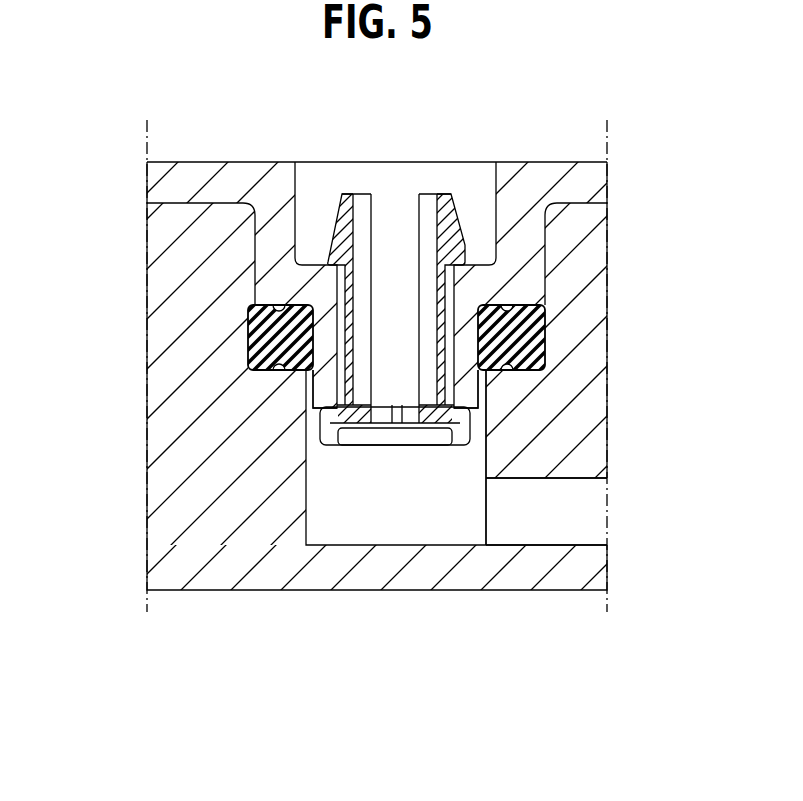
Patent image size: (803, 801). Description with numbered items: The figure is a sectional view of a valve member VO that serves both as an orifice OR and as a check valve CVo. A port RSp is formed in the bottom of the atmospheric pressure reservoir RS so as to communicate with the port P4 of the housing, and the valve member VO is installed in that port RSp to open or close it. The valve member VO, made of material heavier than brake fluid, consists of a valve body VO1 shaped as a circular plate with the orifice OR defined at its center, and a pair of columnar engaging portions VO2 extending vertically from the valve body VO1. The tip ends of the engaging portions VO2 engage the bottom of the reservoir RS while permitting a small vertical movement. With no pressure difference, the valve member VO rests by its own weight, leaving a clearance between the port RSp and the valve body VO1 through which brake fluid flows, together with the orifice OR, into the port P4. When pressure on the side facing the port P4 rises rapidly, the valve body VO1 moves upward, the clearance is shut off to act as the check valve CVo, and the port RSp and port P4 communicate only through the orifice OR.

The atmospheric pressure reservoir RS is at (193, 170).
The valve member VO is at (453, 182).
The columnar engaging portions VO2 is at (340, 227).
The valve body VO1 is at (325, 432).
The port RSp is at (330, 412).
The check valve CVo is at (480, 423).
The port P4 is at (562, 542).
The orifice OR is at (392, 420).